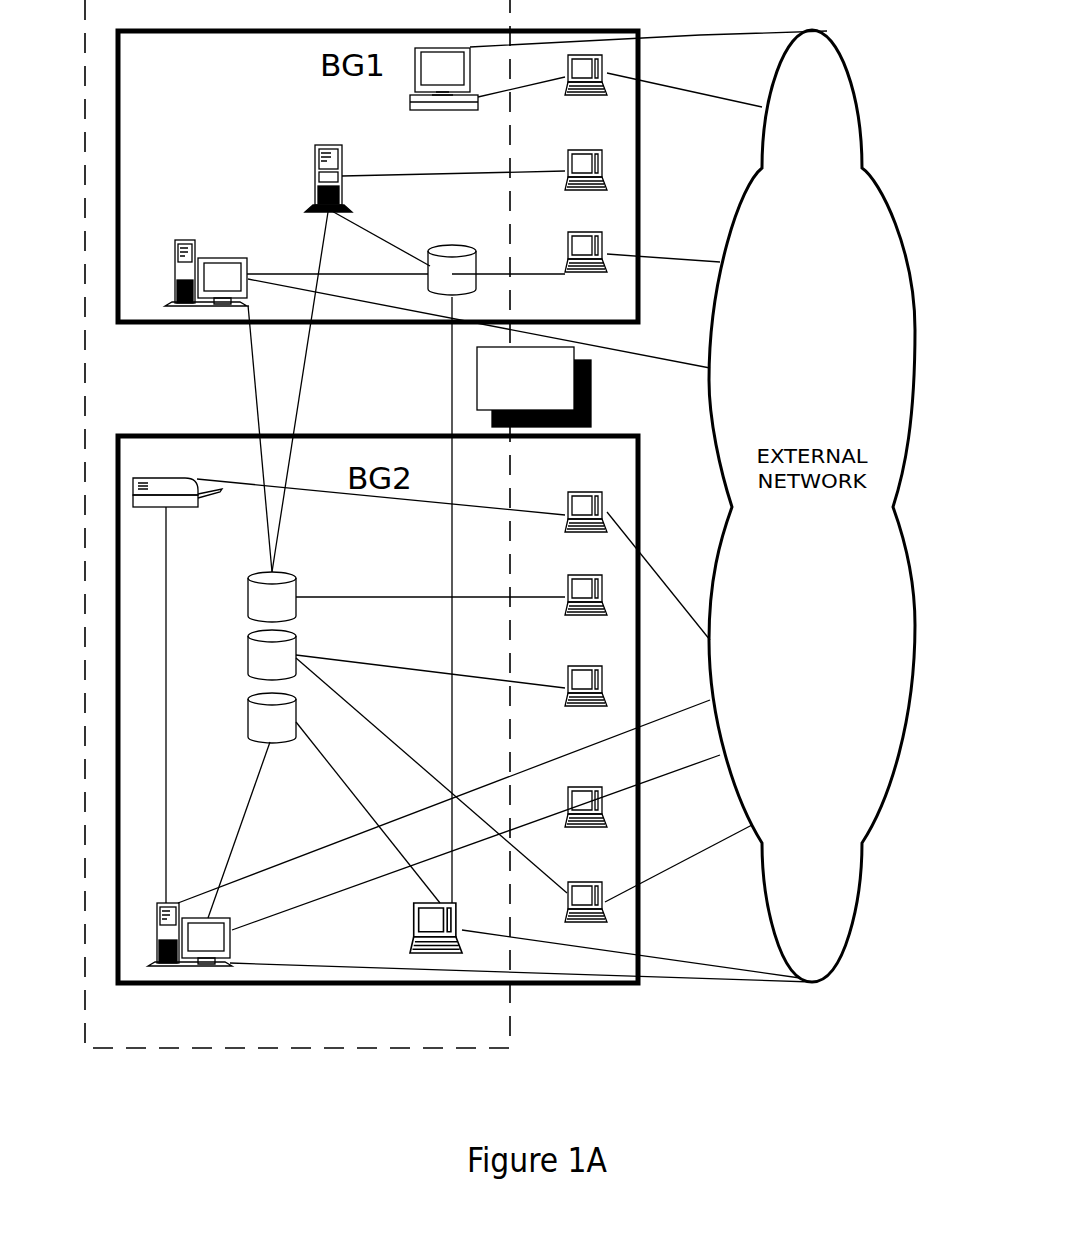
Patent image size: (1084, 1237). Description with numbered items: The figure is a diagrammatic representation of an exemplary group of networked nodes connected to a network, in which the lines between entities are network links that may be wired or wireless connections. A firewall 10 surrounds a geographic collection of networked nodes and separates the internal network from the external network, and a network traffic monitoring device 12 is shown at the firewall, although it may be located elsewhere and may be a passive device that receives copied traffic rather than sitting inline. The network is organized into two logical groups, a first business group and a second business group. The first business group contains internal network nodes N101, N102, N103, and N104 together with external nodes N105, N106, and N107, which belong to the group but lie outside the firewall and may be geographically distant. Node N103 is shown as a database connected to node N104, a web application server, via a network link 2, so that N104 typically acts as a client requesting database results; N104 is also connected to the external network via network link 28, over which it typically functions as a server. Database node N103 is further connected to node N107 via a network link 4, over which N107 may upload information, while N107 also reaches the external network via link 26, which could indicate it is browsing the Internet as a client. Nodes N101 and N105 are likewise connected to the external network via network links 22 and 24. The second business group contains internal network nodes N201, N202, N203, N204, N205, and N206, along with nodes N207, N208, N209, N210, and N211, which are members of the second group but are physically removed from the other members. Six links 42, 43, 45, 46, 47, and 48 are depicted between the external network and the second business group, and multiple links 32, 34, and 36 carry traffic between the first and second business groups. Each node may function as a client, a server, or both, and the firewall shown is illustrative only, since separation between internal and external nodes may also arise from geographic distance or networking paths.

The network link 2 is at (337, 263).
The network link 4 is at (508, 263).
The firewall 10 is at (245, 1048).
The network traffic monitoring device 12 is at (534, 387).
The network link 22 is at (648, 27).
The network link 24 is at (684, 98).
The network link 26 is at (663, 243).
The network link 28 is at (479, 331).
The network link 32 is at (245, 438).
The network link 34 is at (304, 392).
The network link 36 is at (433, 600).
The network link 42 is at (658, 576).
The network link 43 is at (444, 791).
The network link 45 is at (476, 837).
The network link 46 is at (678, 862).
The network link 47 is at (631, 954).
The network link 48 is at (521, 988).
The internal network node N101 is at (444, 95).
The internal network node N102 is at (327, 165).
The database node N103 is at (452, 255).
The web application server node N104 is at (206, 261).
The external network node N105 is at (587, 87).
The external network node N106 is at (587, 182).
The external network node N107 is at (587, 264).
The internal network node N201 is at (242, 597).
The internal network node N202 is at (242, 655).
The internal network node N203 is at (242, 718).
The internal network node N204 is at (217, 934).
The internal network node N205 is at (406, 928).
The internal network node N206 is at (177, 478).
The external network node N207 is at (587, 524).
The external network node N208 is at (587, 608).
The external network node N209 is at (587, 701).
The external network node N210 is at (587, 822).
The external network node N211 is at (587, 917).